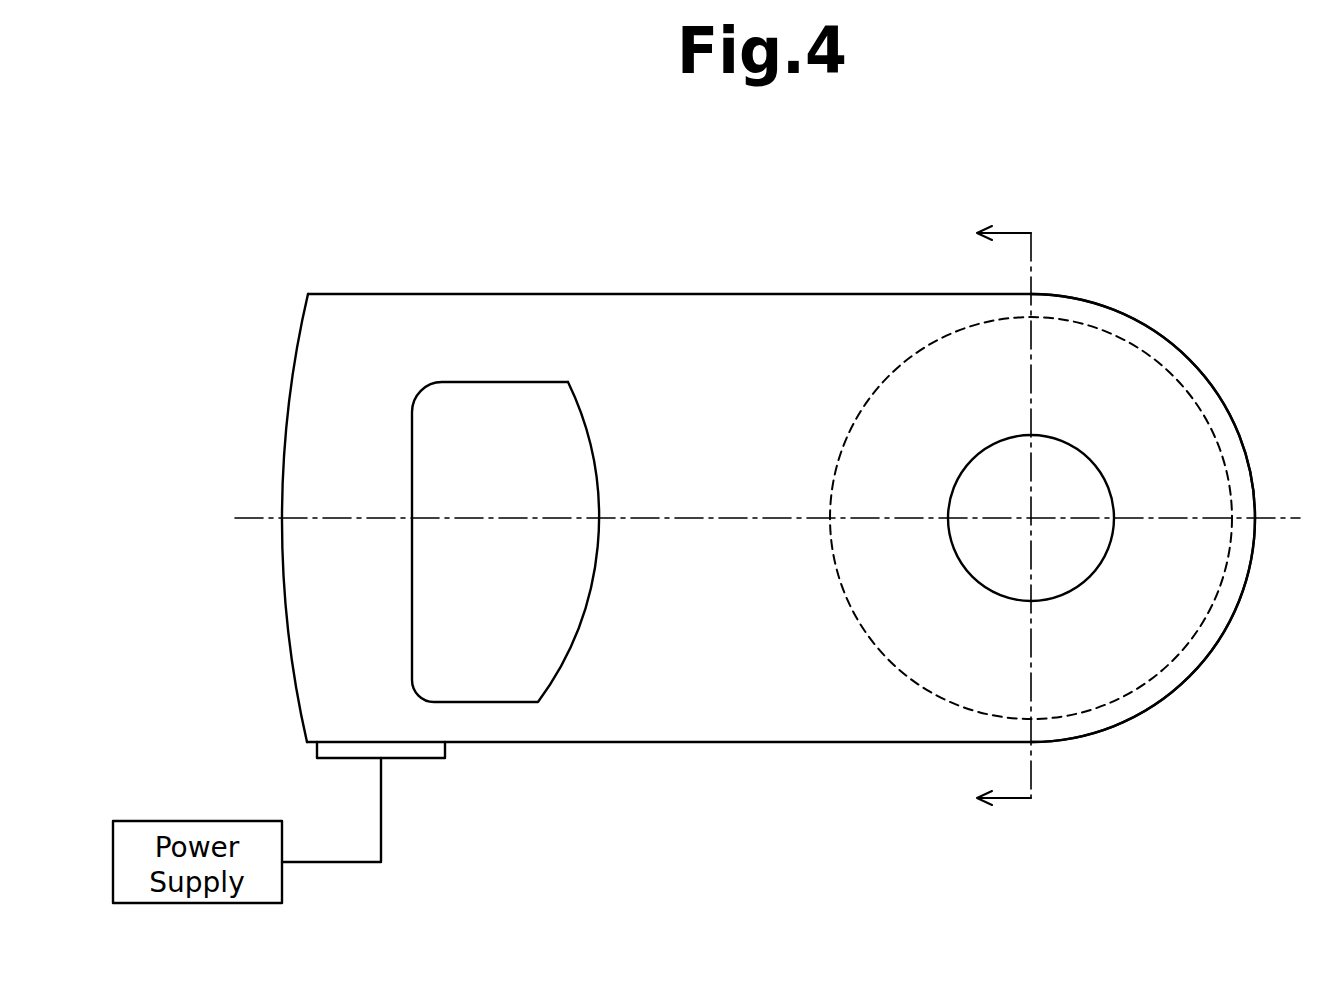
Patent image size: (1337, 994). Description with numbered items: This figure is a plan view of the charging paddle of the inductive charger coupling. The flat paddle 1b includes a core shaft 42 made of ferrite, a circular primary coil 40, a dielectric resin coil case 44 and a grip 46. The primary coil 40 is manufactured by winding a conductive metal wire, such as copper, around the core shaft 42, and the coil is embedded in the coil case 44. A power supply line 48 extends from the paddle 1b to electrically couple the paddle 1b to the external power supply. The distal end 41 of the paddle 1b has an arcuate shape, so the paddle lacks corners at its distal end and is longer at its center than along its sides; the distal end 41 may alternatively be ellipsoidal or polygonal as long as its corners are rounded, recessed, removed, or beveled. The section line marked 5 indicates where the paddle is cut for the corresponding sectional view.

The flat paddle 1b is at (663, 225).
The section line 5- 5 is at (1004, 516).
The circular primary coil 40 is at (1157, 387).
The distal end 41 is at (1237, 423).
The core shaft 42 is at (1062, 570).
The dielectric resin coil case 44 is at (885, 713).
The grip 46 is at (305, 605).
The power supply line 48 is at (381, 808).